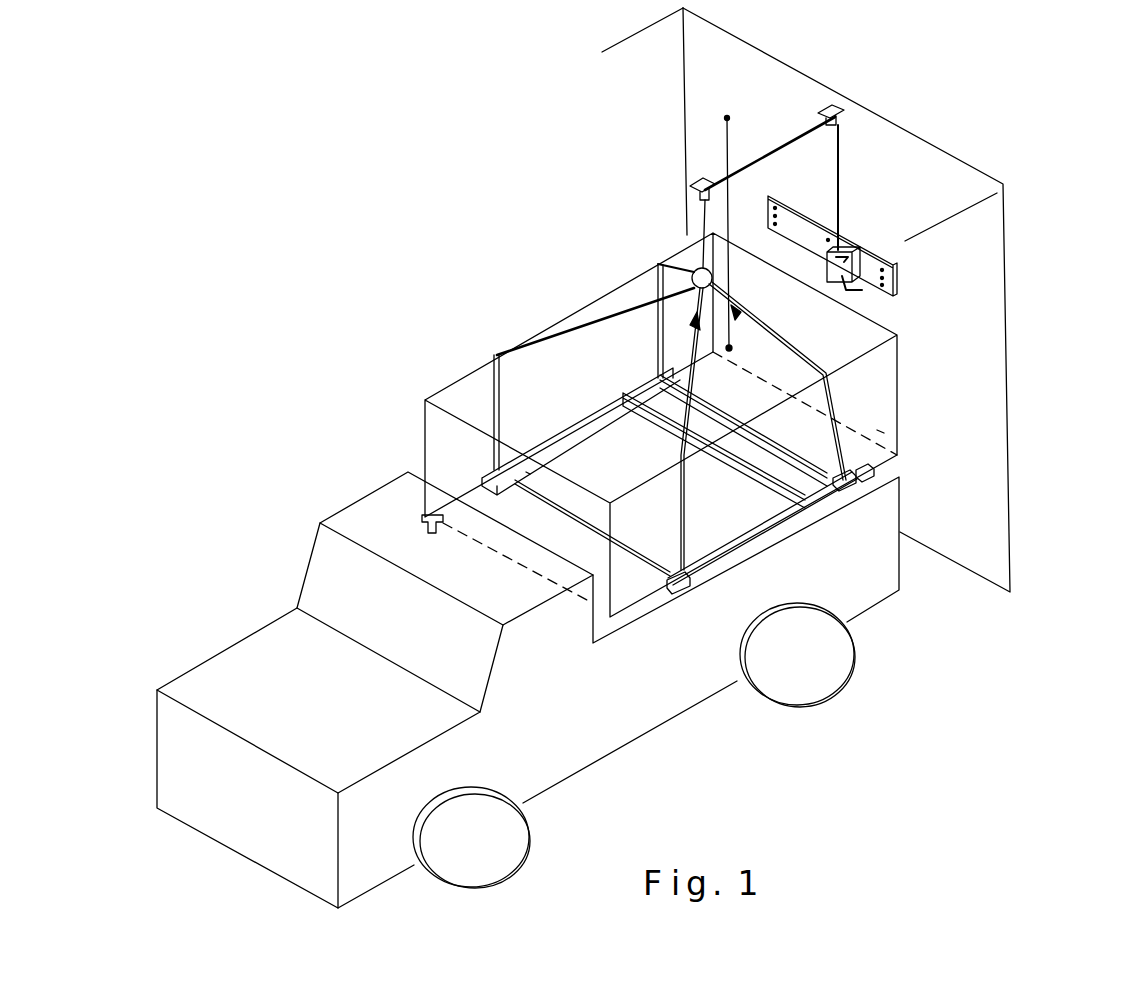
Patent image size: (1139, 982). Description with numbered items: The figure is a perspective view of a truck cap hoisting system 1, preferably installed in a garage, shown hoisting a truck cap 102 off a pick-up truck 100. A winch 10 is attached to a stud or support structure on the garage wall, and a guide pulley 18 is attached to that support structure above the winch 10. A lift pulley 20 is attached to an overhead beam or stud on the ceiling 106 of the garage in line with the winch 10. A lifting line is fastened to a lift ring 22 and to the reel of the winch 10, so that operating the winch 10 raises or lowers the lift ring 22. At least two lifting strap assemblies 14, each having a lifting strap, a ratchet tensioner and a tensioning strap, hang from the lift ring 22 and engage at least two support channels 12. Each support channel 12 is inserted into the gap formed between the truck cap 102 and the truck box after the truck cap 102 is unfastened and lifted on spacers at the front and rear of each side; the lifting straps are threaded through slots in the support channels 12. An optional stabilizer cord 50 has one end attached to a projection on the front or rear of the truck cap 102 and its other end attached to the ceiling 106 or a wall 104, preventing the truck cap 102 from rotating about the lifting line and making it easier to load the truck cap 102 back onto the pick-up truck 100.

The truck cap hoisting system 1 is at (443, 348).
The winch 10 is at (862, 277).
The support channel 12 is at (828, 498).
The lifting strap assembly 14 is at (700, 313).
The guide pulley 18 is at (843, 119).
The lift pulley 20 is at (703, 193).
The lift ring 22 is at (690, 278).
The stabilizer cord 50 is at (728, 153).
The pick-up truck 100 is at (630, 745).
The truck cap 102 is at (547, 328).
The wall 104 is at (990, 397).
The ceiling 106 is at (952, 178).